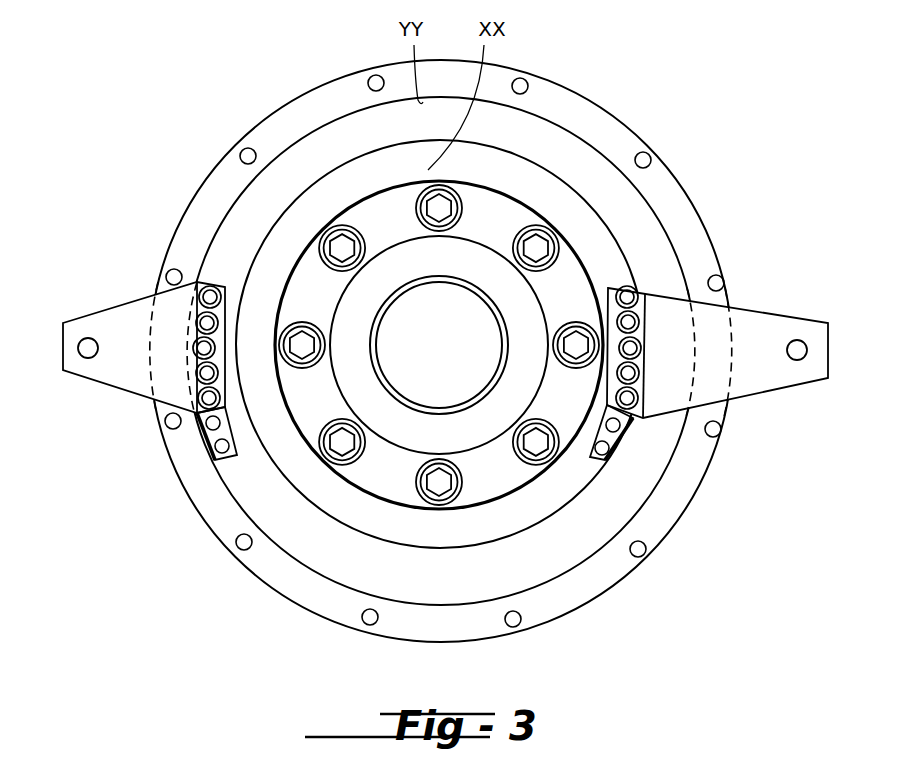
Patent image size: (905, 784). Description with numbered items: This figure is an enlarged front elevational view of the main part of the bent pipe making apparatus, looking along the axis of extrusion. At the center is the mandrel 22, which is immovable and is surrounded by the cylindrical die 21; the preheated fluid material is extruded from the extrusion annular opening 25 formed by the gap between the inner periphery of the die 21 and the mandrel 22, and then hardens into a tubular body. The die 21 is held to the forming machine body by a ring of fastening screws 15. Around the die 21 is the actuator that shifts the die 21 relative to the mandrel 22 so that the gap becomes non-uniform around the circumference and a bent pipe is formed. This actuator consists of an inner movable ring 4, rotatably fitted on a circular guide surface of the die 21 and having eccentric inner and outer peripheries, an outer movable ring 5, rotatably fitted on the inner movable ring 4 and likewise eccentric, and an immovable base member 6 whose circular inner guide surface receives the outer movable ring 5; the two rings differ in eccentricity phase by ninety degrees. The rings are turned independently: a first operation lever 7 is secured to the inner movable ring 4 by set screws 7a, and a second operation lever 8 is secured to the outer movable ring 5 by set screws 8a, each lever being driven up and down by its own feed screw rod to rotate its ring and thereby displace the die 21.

The inner movable ring 4 is at (525, 172).
The outer movable ring 5 is at (645, 215).
The base member 6 is at (622, 133).
The first operation lever 7 is at (693, 340).
The set screws 7a is at (637, 346).
The second operation lever 8 is at (120, 330).
The set screws 8a is at (197, 322).
The fastening screws 15 is at (333, 236).
The die 21 is at (397, 437).
The mandrel 22 is at (392, 368).
The extrusion annular opening 25 is at (470, 403).